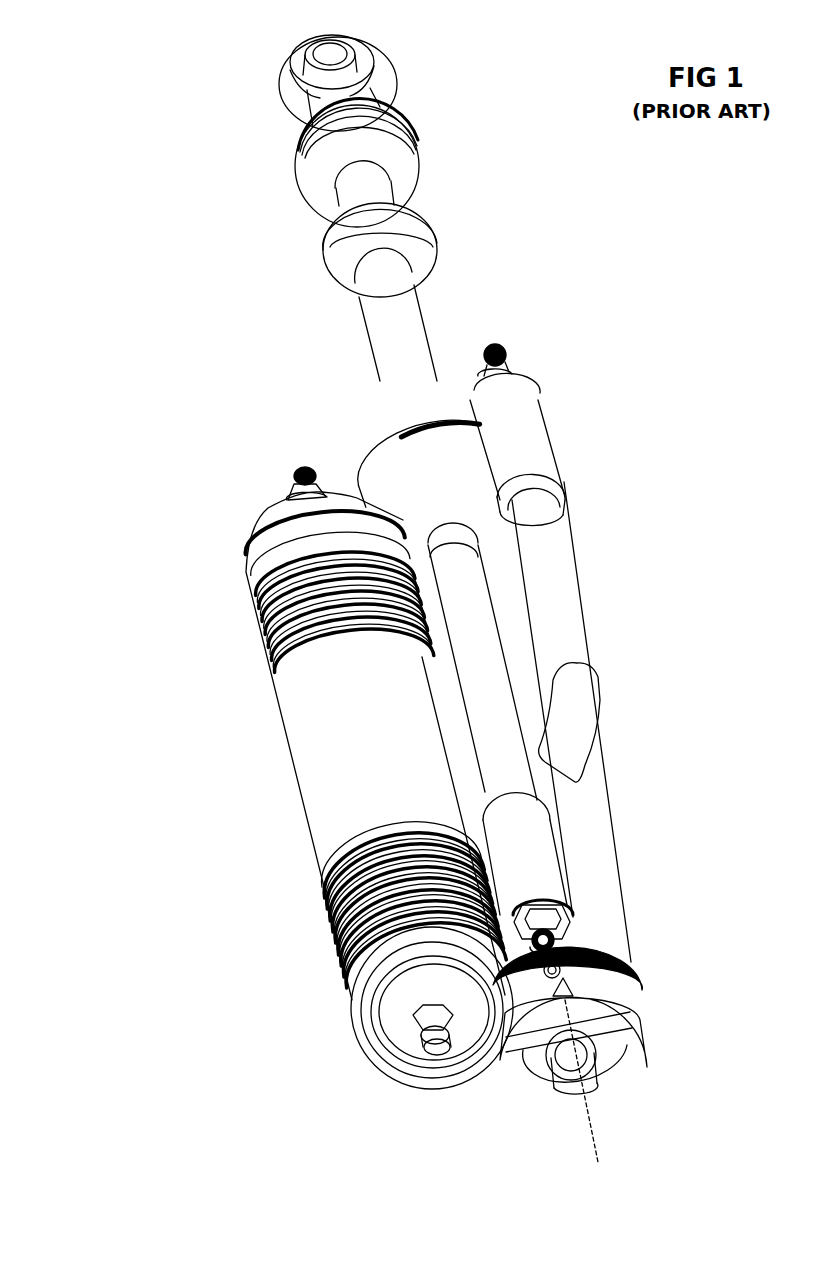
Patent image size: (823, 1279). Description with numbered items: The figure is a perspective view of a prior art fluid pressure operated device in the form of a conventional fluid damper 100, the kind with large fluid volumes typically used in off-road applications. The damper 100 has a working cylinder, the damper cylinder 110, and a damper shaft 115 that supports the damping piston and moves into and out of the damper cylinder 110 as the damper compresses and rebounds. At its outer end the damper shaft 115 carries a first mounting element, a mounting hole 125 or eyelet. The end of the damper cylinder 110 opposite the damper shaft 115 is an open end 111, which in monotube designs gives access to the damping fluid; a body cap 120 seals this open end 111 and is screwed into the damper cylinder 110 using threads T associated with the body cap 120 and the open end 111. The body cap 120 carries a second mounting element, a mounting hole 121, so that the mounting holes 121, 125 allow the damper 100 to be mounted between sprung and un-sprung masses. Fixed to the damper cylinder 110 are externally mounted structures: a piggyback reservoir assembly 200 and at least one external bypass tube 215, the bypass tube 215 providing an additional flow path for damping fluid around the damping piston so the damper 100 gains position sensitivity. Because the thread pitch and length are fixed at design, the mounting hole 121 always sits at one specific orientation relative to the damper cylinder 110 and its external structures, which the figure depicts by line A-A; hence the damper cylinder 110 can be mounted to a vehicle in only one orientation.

The fluid damper 100 is at (135, 211).
The mounting hole 125 is at (330, 50).
The damper shaft 115 is at (397, 349).
The damper cylinder 110 is at (582, 810).
The piggyback reservoir assembly 200 is at (370, 783).
The external bypass tube 215 is at (532, 445).
The open end 111 is at (640, 933).
The threads T is at (610, 982).
The body cap 120 is at (672, 1090).
The mounting hole 121 is at (593, 1043).
The line A- A is at (584, 1082).